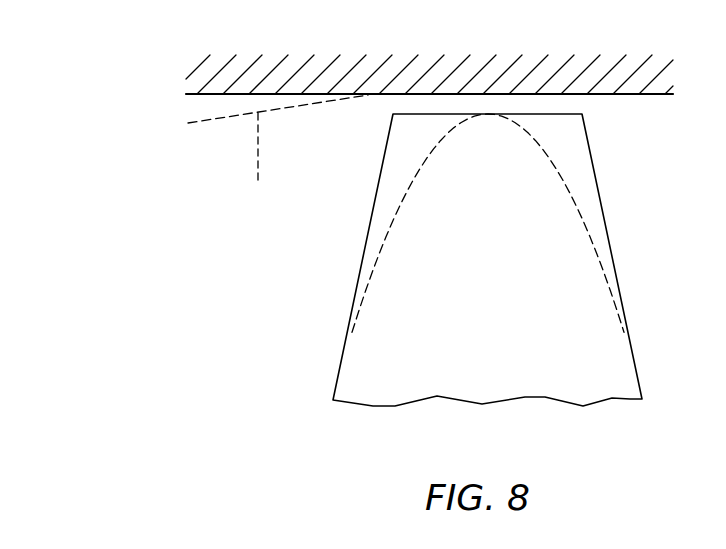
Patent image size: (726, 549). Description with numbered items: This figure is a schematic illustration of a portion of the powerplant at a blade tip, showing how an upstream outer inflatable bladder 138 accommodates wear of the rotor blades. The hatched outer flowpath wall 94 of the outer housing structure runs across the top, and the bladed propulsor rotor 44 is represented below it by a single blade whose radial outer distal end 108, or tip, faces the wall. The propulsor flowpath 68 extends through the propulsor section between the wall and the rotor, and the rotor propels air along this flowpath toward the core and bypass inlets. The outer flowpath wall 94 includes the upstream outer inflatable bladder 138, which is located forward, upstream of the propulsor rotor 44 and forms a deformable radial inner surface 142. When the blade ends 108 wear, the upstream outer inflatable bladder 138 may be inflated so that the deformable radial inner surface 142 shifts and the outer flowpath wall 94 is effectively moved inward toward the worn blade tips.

The propulsor rotor 44 is at (300, 398).
The propulsor flowpath 68 is at (258, 328).
The outer flowpath wall 94 is at (652, 120).
The radial outer distal end 108 is at (433, 114).
The upstream outer inflatable bladder 138 is at (197, 156).
The deformable radial inner surface 142 is at (297, 94).